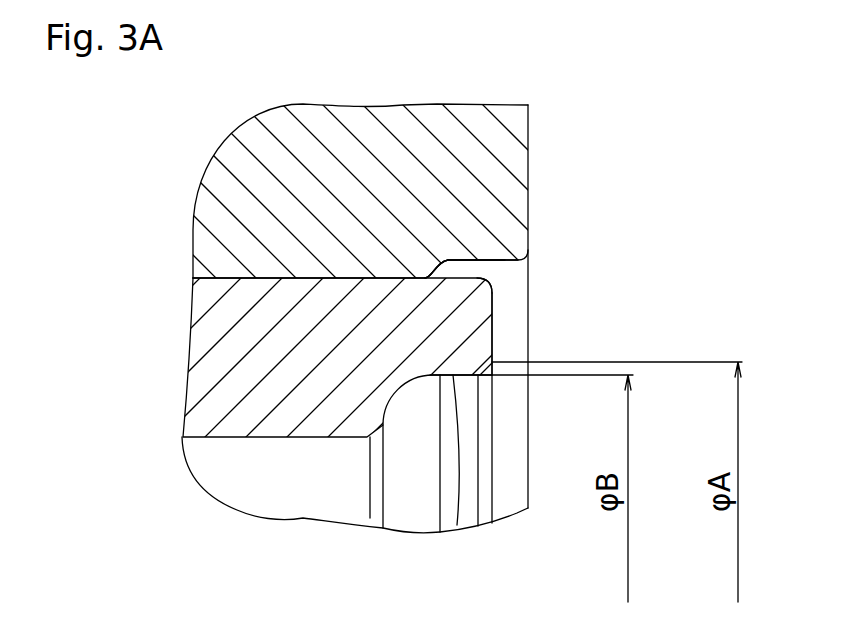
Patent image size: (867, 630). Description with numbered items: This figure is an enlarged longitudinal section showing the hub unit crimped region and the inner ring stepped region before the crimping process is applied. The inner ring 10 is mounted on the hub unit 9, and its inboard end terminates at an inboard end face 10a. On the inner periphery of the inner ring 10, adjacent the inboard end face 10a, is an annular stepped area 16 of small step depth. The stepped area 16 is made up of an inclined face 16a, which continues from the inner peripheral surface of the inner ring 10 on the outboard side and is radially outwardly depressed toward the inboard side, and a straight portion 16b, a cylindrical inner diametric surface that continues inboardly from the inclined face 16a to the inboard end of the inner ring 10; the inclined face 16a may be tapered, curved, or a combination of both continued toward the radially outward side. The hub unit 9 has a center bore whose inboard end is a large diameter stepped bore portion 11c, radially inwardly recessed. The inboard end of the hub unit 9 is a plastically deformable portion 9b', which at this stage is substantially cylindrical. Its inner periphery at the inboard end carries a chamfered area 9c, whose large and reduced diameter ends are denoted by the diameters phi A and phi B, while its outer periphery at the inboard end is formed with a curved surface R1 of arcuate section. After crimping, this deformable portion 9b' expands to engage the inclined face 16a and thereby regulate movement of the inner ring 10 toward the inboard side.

The inner ring 10 is at (207, 232).
The inboard end face 10a is at (528, 167).
The hub unit 9 is at (205, 345).
The stepped area 16 is at (667, 243).
The inclined face 16a is at (435, 268).
The straight portion 16b is at (505, 260).
The curved surface R1 is at (465, 278).
The plastically deformable portion 9b' is at (541, 334).
The chamfered area 9c is at (492, 375).
The large diameter stepped bore portion 11c is at (459, 500).